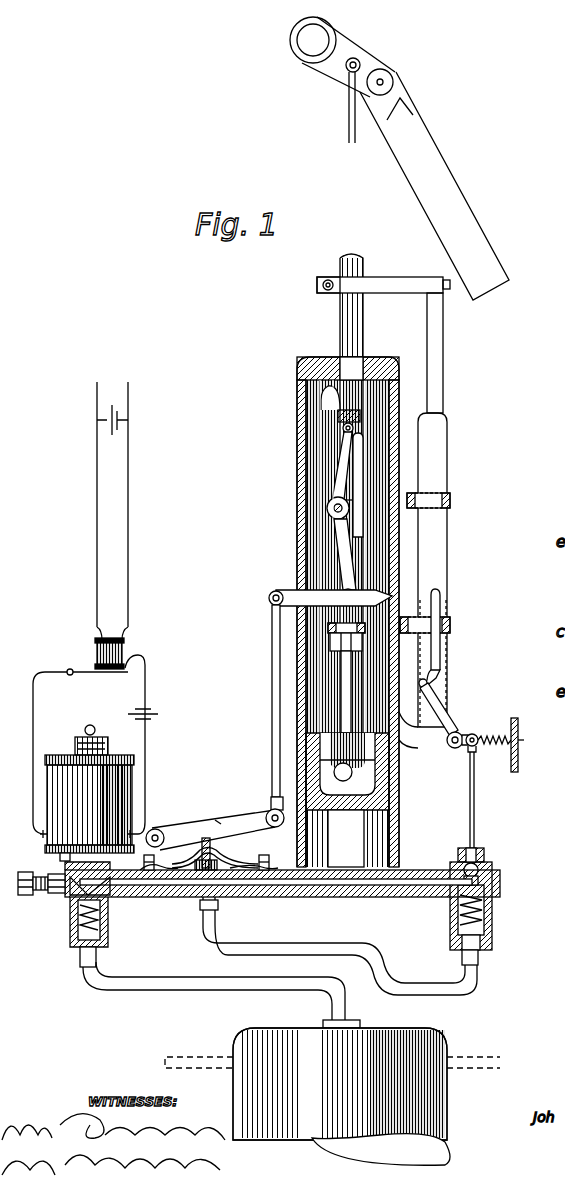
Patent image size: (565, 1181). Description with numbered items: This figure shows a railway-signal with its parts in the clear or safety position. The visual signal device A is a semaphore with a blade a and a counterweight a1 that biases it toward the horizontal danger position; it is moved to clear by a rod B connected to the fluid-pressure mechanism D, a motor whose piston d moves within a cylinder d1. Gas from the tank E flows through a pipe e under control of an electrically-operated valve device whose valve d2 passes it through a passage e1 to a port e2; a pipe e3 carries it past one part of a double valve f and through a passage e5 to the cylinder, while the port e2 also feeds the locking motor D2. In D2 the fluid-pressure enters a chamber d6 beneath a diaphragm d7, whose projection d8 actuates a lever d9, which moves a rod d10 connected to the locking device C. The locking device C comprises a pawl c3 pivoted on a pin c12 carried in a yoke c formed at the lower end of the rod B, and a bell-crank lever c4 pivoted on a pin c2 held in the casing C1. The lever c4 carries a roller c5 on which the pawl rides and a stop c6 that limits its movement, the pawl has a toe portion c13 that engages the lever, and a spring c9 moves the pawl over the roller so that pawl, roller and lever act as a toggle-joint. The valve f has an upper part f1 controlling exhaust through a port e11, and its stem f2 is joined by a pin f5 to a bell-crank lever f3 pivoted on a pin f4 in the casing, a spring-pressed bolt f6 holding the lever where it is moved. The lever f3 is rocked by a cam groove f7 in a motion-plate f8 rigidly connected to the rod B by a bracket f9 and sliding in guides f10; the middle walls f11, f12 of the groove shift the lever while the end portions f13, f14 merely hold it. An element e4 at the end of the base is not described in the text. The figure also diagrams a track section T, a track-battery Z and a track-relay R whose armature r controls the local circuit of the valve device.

The visual signal device A is at (399, 158).
The blade a is at (434, 186).
The counterweight a1 is at (322, 65).
The rod B is at (345, 125).
The bracket f9 is at (410, 290).
The motion-plate f8 is at (447, 562).
The guides f10 is at (450, 497).
The wall of cam groove f11 is at (451, 630).
The casing C1 is at (398, 466).
The stop c6 is at (327, 383).
The pin c12 is at (344, 426).
The spring c9 is at (395, 430).
The yoke portion c is at (346, 451).
The pawl c3 is at (350, 478).
The roller c5 is at (334, 508).
The locking device C is at (294, 556).
The lever c4 is at (345, 569).
The toe portion c13 is at (374, 540).
The pin c2 is at (340, 592).
The piston d is at (380, 805).
The cylinder d1 is at (398, 840).
The end portion of cam groove f14 is at (440, 606).
The cam groove f7 is at (430, 668).
The wall of cam groove f12 is at (428, 682).
The bell-crank lever f3 is at (440, 713).
The pin f4 is at (455, 748).
The end portion of cam groove f13 is at (425, 740).
The pin f5 is at (478, 736).
The spring-pressed pin or bolt f6 is at (512, 736).
The valve stem f2 is at (476, 798).
The double valve f is at (492, 905).
The upper part of valve f1 is at (482, 852).
The exhaust port e11 is at (490, 866).
The passage or conduit e1 is at (160, 880).
The passage or conduit e5 is at (405, 880).
The coupling nut e4 is at (68, 878).
The valve d2 is at (72, 900).
The port e2 is at (220, 895).
The pipe or conduit e3 is at (326, 947).
The pipe or conduit e is at (160, 985).
The tank or reservoir E is at (332, 1092).
The railroad-track section T is at (112, 511).
The track-battery Z is at (112, 410).
The track-relay R is at (97, 652).
The armature r is at (88, 676).
The fluid-pressure mechanism D is at (92, 790).
The rod d10 is at (272, 716).
The fluid-pressure mechanism D2 is at (170, 828).
The lever d9 is at (221, 822).
The diaphragm d7 is at (170, 862).
The projection d8 is at (205, 838).
The chamber d6 is at (218, 858).